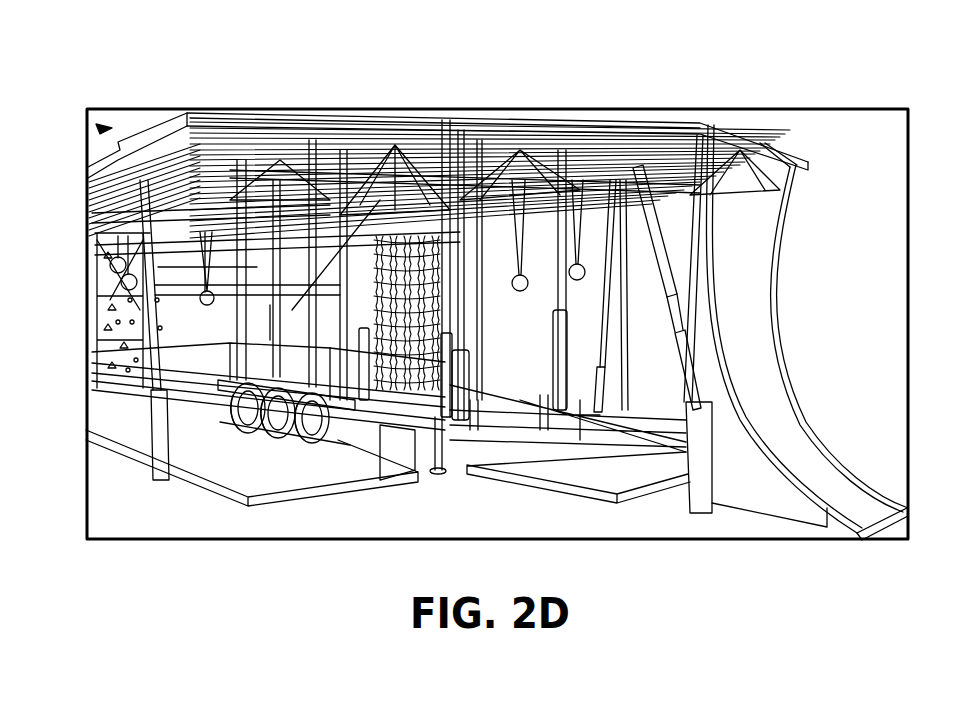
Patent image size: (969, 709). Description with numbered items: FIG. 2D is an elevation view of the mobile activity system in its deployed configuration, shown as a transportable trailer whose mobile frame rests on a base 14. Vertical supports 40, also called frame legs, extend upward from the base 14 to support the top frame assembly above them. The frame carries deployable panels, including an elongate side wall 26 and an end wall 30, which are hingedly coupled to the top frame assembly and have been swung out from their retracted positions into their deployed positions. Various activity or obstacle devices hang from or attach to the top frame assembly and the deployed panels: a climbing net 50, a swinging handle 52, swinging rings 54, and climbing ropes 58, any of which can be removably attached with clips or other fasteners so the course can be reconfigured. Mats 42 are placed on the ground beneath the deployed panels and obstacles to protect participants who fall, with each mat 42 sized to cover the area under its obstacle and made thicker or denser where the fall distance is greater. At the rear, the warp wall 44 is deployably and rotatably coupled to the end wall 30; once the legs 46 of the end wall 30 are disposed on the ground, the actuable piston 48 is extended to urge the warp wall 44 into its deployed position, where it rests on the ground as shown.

The base 14 is at (461, 437).
The side wall 26 is at (93, 128).
The end wall 30 is at (596, 126).
The vertical supports 40 is at (487, 368).
The mats 42 is at (237, 467).
The warp wall 44 is at (782, 437).
The legs 46 is at (792, 232).
The actuable piston 48 is at (657, 265).
The climbing net 50 is at (392, 385).
The swinging handle 52 is at (100, 372).
The swinging rings 54 is at (514, 291).
The climbing ropes 58 is at (560, 370).